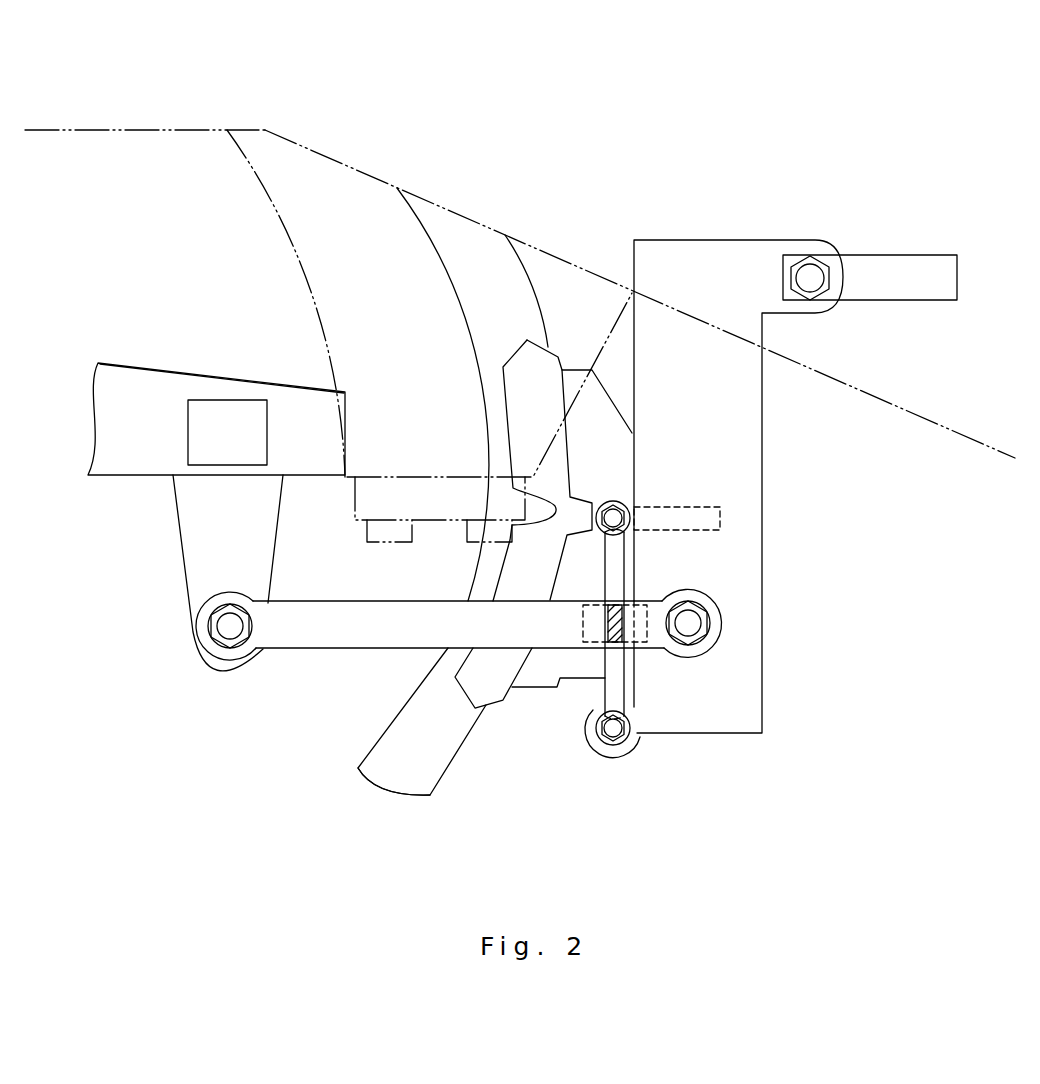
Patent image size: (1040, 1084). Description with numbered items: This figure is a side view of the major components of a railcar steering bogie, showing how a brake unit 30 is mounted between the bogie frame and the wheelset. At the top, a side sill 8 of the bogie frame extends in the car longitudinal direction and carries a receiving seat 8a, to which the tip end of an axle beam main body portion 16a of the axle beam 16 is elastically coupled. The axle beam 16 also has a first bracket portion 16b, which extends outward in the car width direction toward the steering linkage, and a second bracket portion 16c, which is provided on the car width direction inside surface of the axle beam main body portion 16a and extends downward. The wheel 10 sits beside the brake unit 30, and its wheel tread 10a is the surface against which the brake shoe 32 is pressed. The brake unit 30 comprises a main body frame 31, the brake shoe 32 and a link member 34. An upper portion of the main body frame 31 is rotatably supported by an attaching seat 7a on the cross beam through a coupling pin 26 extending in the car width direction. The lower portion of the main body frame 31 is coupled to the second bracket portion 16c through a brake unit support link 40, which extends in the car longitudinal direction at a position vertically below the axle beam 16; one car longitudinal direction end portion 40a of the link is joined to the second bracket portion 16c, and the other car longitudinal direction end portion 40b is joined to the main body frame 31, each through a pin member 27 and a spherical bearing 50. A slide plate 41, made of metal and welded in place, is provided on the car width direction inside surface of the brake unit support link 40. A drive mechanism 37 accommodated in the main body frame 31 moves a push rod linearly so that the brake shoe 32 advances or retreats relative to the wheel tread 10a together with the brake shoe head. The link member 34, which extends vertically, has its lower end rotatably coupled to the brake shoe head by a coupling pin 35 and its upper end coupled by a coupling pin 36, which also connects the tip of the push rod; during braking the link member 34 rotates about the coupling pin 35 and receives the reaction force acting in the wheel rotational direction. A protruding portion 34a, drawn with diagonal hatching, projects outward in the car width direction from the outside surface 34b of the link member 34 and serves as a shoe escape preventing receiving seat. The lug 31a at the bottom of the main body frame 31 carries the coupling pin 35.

The side sill 8 is at (37, 130).
The receiving seat 8a is at (240, 147).
The attaching seat 7a is at (902, 267).
The wheel 10 is at (440, 768).
The wheel tread 10a is at (392, 740).
The axle beam 16 is at (118, 365).
The axle beam main body portion 16a is at (158, 372).
The first bracket portion 16b is at (228, 408).
The second bracket portion 16c is at (195, 517).
The coupling pin 26 is at (808, 272).
The pin member 27 is at (225, 627).
The brake unit 30 is at (565, 297).
The main body frame 31 is at (706, 563).
The bracket lug 31a is at (593, 740).
The brake shoe 32 is at (483, 695).
The link member 34 is at (695, 696).
The protruding portion 34a is at (592, 588).
The outside surface 34b is at (618, 568).
The coupling pin 35 is at (612, 733).
The coupling pin 36 is at (620, 500).
The drive mechanism 37 is at (720, 517).
The brake unit support link 40 is at (465, 664).
The car longitudinal direction end portion 40a is at (227, 598).
The car longitudinal direction end portion 40b is at (693, 588).
The slide plate 41 is at (660, 648).
The spherical bearing 50 is at (225, 633).